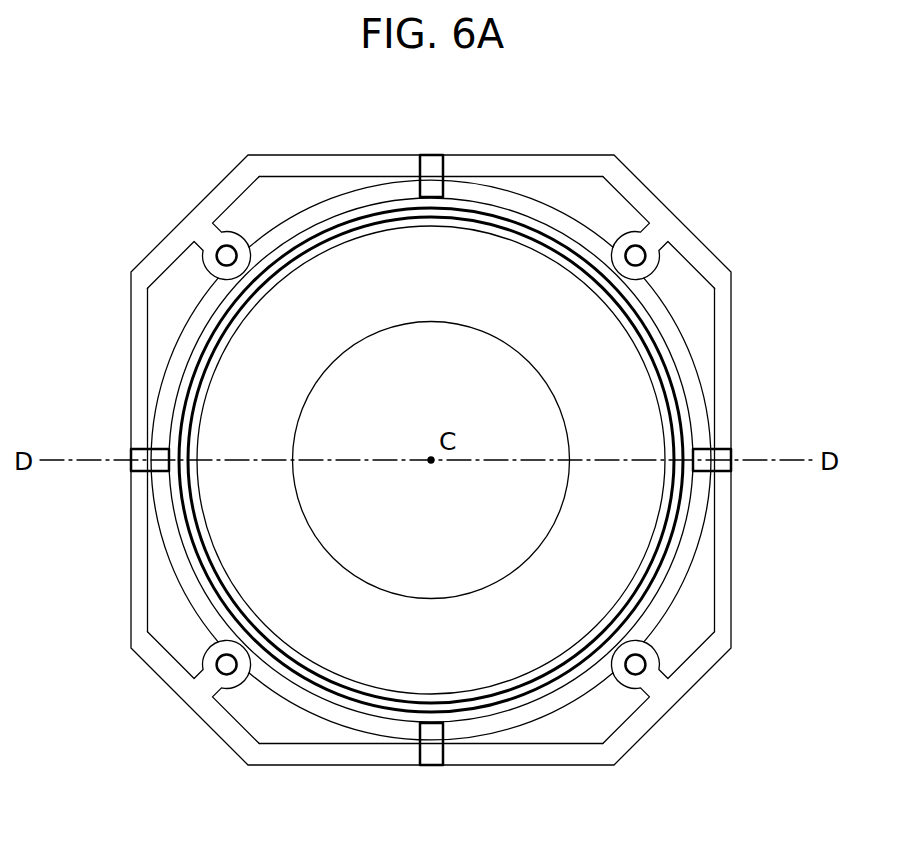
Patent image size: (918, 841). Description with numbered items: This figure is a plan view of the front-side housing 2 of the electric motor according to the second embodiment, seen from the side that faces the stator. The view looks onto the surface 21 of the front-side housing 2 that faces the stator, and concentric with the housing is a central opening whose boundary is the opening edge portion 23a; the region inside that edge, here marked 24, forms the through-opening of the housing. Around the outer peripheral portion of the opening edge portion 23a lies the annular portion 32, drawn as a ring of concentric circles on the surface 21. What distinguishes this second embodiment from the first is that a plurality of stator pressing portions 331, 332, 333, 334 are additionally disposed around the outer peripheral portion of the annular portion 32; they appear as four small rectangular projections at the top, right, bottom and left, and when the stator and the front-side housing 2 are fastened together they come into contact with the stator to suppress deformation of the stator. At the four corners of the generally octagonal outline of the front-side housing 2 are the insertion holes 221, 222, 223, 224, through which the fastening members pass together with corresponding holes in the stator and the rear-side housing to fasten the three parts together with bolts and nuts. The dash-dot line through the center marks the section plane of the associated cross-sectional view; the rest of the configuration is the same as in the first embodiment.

The front-side housing 2 is at (708, 243).
The surface of the front-side housing facing the stator 21 is at (697, 382).
The annular portion 32 is at (669, 347).
The opening edge portion 23a is at (546, 258).
The opening 24 is at (471, 330).
The insertion hole 221 is at (217, 665).
The insertion hole 222 is at (647, 668).
The insertion hole 223 is at (640, 246).
The insertion hole 224 is at (226, 246).
The stator pressing portion 331 is at (433, 766).
The stator pressing portion 332 is at (726, 448).
The stator pressing portion 333 is at (428, 162).
The stator pressing portion 334 is at (142, 448).